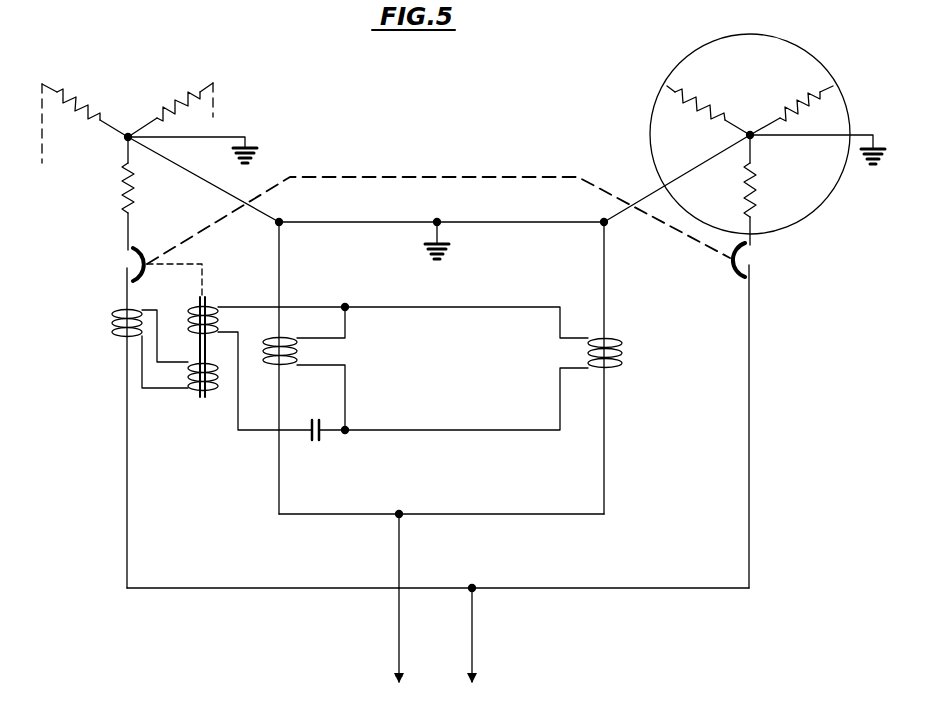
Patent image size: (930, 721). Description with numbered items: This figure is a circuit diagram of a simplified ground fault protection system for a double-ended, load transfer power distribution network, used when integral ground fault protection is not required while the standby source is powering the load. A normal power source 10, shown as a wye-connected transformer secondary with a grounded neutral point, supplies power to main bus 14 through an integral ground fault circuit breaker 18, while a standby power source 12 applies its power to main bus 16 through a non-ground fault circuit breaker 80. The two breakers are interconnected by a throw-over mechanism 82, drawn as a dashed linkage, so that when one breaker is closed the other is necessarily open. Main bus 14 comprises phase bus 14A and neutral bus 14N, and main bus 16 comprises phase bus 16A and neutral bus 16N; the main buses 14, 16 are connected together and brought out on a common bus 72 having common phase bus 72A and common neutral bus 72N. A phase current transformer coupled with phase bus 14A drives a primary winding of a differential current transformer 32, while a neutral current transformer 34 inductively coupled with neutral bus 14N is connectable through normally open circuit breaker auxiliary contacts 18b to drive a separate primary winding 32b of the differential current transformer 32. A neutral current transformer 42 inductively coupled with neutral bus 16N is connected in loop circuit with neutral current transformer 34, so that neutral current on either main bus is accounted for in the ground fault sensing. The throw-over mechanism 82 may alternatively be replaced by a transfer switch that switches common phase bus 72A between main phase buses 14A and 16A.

The normal power source 10 is at (141, 102).
The standby power source 12 is at (763, 94).
The main bus 14 is at (218, 514).
The phase bus of main bus 14 14A is at (127, 480).
The neutral bus of main bus 14 14N is at (281, 480).
The main bus 16 is at (699, 514).
The phase bus of main bus 16 16A is at (752, 478).
The neutral bus of main bus 16 16N is at (603, 480).
The integral ground fault circuit breaker 18 is at (106, 314).
The circuit breaker auxiliary contacts 18b is at (316, 418).
The differential current transformer 32 is at (202, 400).
The separate primary winding of differential current transformer 32b is at (190, 316).
The neutral current transformer 34 is at (268, 346).
The neutral current transformer 42 is at (628, 352).
The common bus 72 is at (449, 687).
The common phase bus 72A is at (478, 625).
The common neutral bus 72N is at (399, 625).
The non-ground fault circuit breaker 80 is at (759, 259).
The throw-over mechanism 82 is at (401, 177).